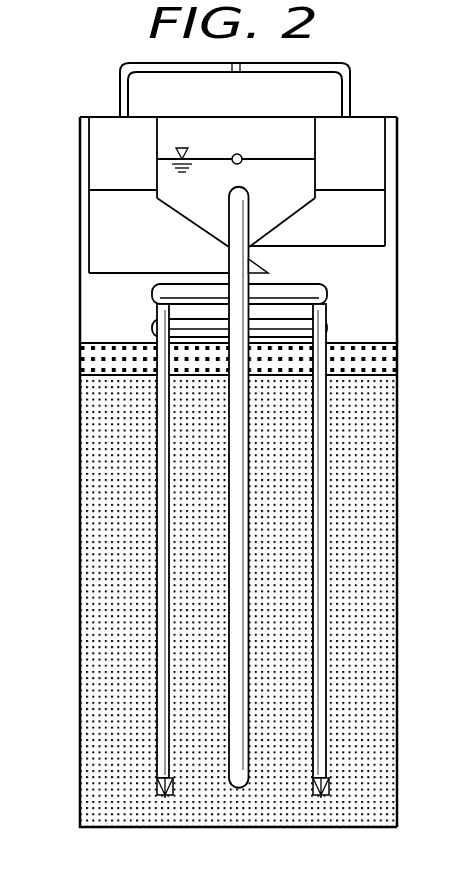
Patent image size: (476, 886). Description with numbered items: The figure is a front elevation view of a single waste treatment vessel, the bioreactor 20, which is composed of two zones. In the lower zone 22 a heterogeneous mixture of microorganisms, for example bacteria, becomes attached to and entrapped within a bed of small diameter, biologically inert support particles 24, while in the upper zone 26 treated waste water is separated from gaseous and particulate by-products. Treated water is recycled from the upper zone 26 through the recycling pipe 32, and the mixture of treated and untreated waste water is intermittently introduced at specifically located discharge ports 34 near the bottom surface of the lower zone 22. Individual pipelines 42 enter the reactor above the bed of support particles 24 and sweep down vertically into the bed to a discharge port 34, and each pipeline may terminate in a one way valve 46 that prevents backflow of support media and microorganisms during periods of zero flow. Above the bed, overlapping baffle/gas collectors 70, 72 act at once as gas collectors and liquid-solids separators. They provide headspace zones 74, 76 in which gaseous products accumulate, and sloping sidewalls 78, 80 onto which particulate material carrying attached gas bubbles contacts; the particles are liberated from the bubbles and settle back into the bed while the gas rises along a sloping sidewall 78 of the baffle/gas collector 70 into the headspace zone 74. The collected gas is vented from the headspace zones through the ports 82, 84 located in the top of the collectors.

The bioreactor 20 is at (404, 410).
The lower zone 22 is at (400, 740).
The support particles 24 is at (375, 658).
The upper zone 26 is at (378, 298).
The recycling pipe 32 is at (243, 448).
The discharge ports 34 is at (163, 798).
The pipelines 42 is at (157, 448).
The one way valve 46 is at (162, 790).
The baffle/gas collector 70 is at (375, 117).
The baffle/gas collector 72 is at (102, 115).
The headspace zone 74 is at (368, 152).
The headspace zone 76 is at (108, 153).
The sloping sidewall 78 is at (287, 218).
The sloping sidewall 80 is at (185, 222).
The port 82 is at (352, 83).
The port 84 is at (118, 92).